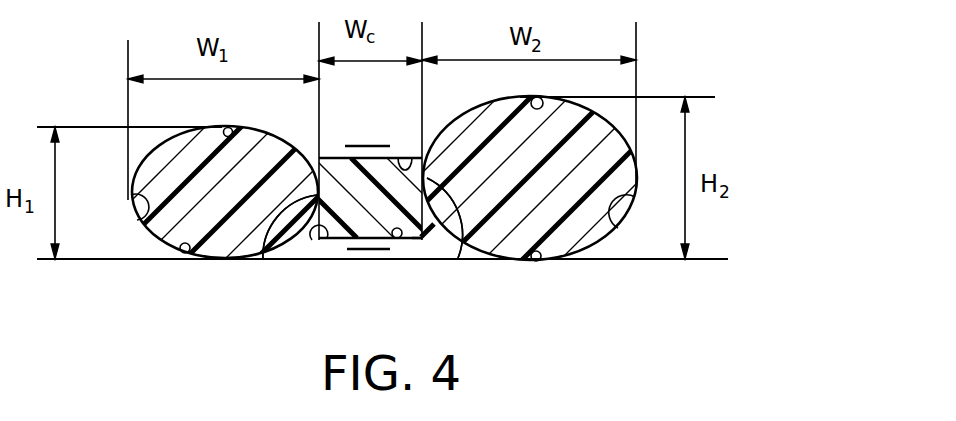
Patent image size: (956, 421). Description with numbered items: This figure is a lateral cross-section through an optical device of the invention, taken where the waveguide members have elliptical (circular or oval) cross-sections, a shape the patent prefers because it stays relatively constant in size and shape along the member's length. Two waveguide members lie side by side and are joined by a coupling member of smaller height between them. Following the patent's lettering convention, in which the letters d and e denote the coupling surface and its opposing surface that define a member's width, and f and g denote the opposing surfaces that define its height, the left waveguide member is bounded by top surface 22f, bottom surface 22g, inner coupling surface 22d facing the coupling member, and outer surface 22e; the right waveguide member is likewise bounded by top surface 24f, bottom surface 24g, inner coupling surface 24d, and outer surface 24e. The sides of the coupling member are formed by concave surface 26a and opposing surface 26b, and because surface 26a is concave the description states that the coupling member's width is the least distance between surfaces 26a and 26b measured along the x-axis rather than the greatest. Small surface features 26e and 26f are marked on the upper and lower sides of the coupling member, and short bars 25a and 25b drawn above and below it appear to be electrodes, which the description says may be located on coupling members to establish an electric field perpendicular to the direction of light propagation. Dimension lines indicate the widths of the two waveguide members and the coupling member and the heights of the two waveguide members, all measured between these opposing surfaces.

The top surface of first leg 22f is at (229, 129).
The outer side surface of first leg 22e is at (138, 222).
The bottom surface of first leg 22g is at (185, 258).
The inner side surface of first leg 22d is at (266, 248).
The concave surface 26a is at (322, 230).
The lower surface feature of web 26f is at (400, 240).
The lower surface of web 25b is at (350, 250).
The opposing surface 26b is at (421, 242).
The upper surface of web 25a is at (357, 144).
The upper notch of web 26e is at (403, 157).
The top surface of second leg 24f is at (543, 100).
The inner side surface of second leg 24d is at (456, 242).
The bottom surface of second leg 24g is at (538, 262).
The outer side surface of second leg 24e is at (618, 228).